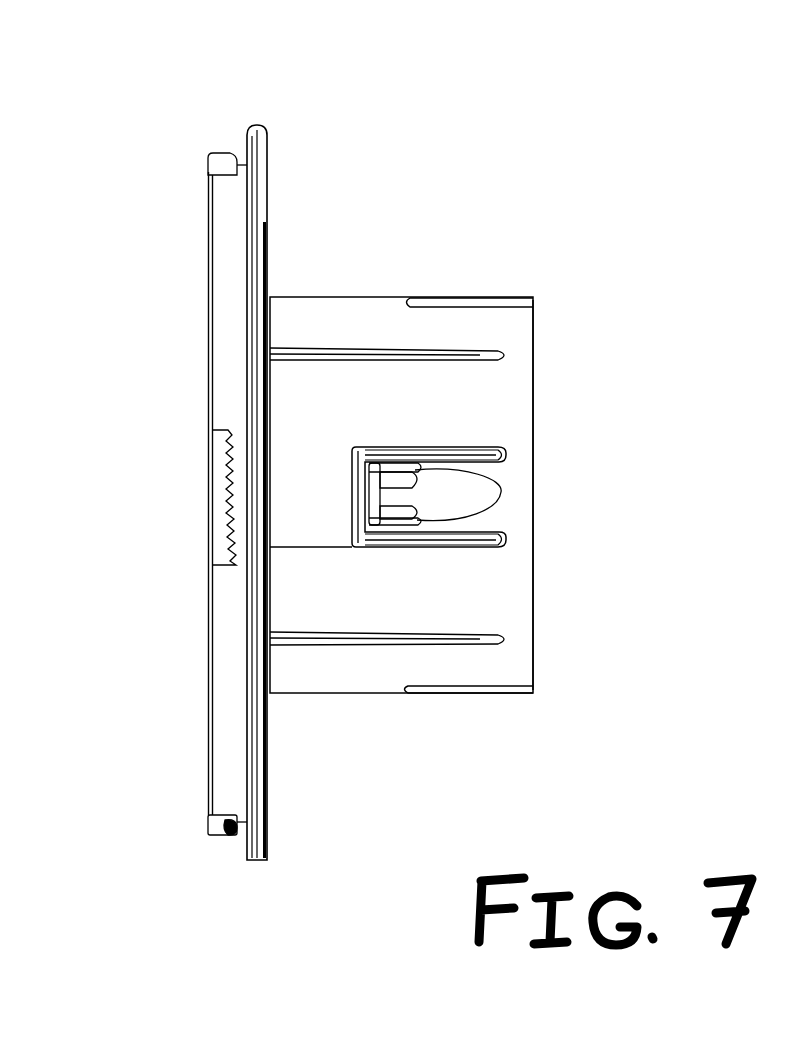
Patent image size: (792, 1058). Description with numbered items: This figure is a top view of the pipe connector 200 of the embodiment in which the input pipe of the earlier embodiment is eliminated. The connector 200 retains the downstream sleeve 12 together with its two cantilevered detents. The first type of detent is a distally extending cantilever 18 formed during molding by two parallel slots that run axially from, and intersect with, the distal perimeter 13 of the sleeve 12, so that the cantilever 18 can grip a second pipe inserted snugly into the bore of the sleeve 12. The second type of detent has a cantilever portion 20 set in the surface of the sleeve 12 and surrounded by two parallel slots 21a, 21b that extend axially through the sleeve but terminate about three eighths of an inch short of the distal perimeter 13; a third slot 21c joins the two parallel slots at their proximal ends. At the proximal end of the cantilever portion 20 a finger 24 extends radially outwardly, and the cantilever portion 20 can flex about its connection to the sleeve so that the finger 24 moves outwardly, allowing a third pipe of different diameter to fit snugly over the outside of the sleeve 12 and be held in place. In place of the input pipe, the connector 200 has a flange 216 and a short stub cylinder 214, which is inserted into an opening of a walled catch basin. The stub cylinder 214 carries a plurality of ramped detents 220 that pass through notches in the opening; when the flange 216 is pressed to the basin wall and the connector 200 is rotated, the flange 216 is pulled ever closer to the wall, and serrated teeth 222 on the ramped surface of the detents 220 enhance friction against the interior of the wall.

The connector 200 is at (609, 119).
The stub cylinder 214 is at (224, 216).
The flange 216 is at (267, 136).
The ramped detents 220 is at (222, 154).
The serrated teeth 222 is at (227, 448).
The sleeve 12 is at (490, 404).
The distal perimeter 13 is at (533, 652).
The cantilever 18 is at (465, 298).
The cantilever portion 20 is at (462, 502).
The parallel slot 21a is at (500, 458).
The parallel slot 21b is at (500, 535).
The third slot 21c is at (369, 494).
The finger 24 is at (388, 507).